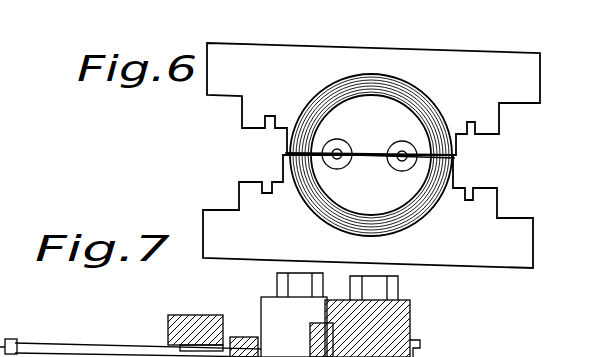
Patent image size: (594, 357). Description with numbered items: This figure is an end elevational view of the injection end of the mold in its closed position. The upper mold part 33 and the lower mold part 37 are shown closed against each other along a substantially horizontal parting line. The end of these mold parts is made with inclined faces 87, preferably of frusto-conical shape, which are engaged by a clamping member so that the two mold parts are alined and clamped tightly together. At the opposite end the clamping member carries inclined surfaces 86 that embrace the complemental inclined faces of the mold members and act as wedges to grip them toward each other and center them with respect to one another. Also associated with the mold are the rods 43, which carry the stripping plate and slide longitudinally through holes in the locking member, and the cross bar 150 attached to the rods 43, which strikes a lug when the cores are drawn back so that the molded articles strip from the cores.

In FIG. 6, the upper mold part 33 is at (373, 99).
In FIG. 6, the lower mold part 37 is at (368, 211).
In FIG. 6, the inclined faces 87 is at (411, 91).
In FIG. 7, the rods 43 is at (89, 351).
In FIG. 7, the inclined surfaces 86 is at (165, 343).
In FIG. 7, the cross bar 150 is at (238, 337).